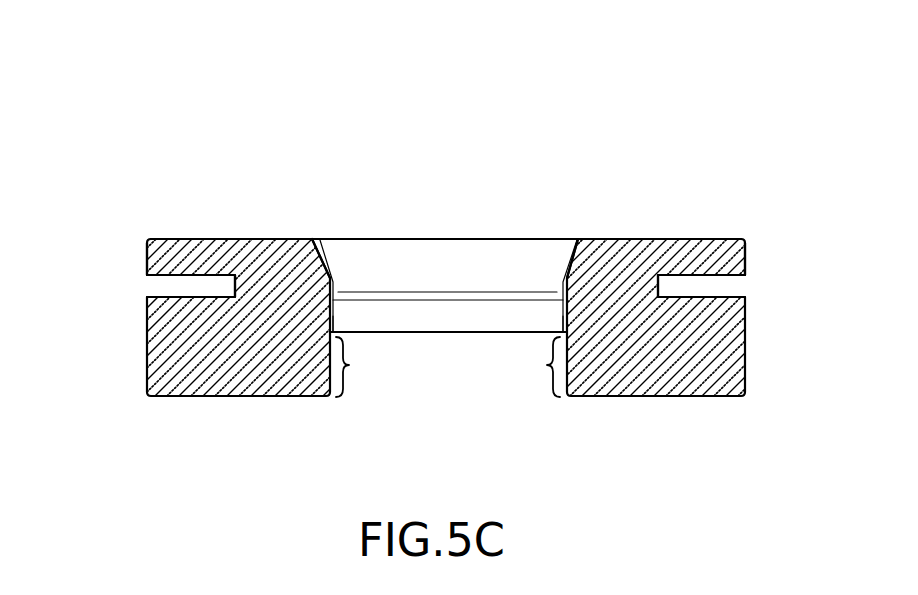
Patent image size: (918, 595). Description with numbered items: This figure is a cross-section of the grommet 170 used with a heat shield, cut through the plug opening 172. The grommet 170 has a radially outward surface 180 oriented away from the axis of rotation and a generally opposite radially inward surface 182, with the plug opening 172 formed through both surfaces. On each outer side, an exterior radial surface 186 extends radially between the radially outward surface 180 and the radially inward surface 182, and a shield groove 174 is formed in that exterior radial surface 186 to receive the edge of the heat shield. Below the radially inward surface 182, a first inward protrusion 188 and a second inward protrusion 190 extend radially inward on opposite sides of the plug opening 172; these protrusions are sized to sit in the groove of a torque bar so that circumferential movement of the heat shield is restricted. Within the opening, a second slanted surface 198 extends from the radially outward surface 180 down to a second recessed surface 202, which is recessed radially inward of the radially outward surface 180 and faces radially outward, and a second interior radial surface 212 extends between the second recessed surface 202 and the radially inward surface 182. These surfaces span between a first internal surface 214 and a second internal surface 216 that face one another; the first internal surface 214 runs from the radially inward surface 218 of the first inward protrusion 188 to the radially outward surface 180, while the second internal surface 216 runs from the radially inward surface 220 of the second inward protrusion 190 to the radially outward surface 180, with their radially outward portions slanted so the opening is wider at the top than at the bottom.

The grommet 170 is at (147, 92).
The plug opening 172 is at (454, 234).
The shield groove 174 is at (136, 284).
The radially outward surface 180 is at (199, 239).
The radially inward surface 182 is at (440, 333).
The exterior radial surface 186 is at (147, 262).
The first inward protrusion 188 is at (547, 365).
The second inward protrusion 190 is at (347, 365).
The second slanted surface 198 is at (508, 255).
The second recessed surface 202 is at (405, 296).
The second interior radial surface 212 is at (477, 312).
The first internal surface 214 is at (563, 307).
The second internal surface 216 is at (333, 307).
The radially inward surface of first inward protrusion 218 is at (668, 397).
The radially inward surface of second inward protrusion 220 is at (222, 397).